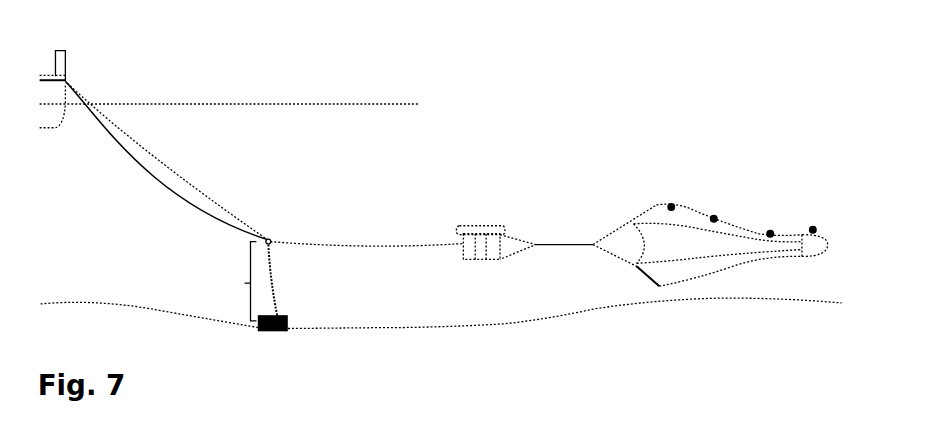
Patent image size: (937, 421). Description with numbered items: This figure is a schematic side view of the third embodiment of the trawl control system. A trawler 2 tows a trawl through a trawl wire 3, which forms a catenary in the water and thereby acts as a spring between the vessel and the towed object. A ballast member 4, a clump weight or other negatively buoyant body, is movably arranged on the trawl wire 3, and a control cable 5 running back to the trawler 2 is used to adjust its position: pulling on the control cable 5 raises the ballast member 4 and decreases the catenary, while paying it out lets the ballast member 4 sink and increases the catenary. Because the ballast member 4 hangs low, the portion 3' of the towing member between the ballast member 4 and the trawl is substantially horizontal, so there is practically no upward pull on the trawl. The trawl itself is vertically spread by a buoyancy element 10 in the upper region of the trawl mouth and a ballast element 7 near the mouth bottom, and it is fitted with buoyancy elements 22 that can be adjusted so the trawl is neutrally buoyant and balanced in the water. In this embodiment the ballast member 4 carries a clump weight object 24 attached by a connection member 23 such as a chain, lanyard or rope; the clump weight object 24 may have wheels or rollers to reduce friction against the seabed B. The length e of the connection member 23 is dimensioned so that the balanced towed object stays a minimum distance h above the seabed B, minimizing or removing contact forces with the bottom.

The trawler 2 is at (60, 58).
The trawl wire 3 is at (166, 160).
The portion of the towing member 3' is at (366, 197).
The ballast member 4 is at (272, 243).
The control cable 5 is at (163, 158).
The ballast element 7 is at (640, 268).
The buoyancy element 10 is at (648, 207).
The buoyancy elements 22 is at (682, 203).
The connection member 23 is at (277, 280).
The clump weight object 24 is at (287, 325).
The seabed B is at (93, 300).
The length of the connection member e is at (240, 281).
The distance to the seabed h is at (665, 290).